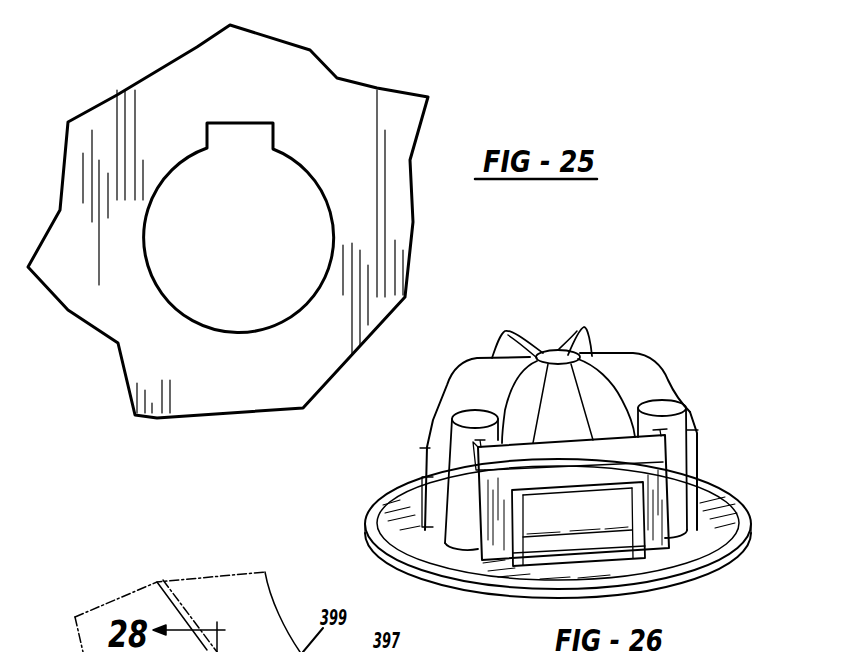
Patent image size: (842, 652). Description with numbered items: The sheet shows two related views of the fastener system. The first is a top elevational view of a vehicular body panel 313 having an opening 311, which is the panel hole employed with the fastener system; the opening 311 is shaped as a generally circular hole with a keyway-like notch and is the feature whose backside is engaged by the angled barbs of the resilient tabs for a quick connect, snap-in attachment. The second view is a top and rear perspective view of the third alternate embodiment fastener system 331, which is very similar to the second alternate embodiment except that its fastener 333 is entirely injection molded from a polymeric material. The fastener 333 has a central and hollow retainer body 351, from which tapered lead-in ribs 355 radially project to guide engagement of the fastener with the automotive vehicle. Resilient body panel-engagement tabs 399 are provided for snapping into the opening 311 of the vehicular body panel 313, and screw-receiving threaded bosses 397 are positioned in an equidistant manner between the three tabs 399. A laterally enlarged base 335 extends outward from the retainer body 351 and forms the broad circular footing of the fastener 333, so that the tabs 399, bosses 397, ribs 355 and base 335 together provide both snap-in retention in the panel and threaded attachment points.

In FIG. 25, the vehicular body panel 313 is at (183, 83).
In FIG. 25, the opening 311 is at (142, 240).
In FIG. 26, the fastener system 331 is at (622, 293).
In FIG. 26, the fastener 333 is at (686, 382).
In FIG. 26, the base 335 is at (687, 547).
In FIG. 26, the retainer body 351 is at (560, 400).
In FIG. 26, the tapered lead-in ribs 355 is at (645, 375).
In FIG. 26, the threaded bosses 397 is at (460, 460).
In FIG. 26, the body panel-engagement tabs 399 is at (610, 510).